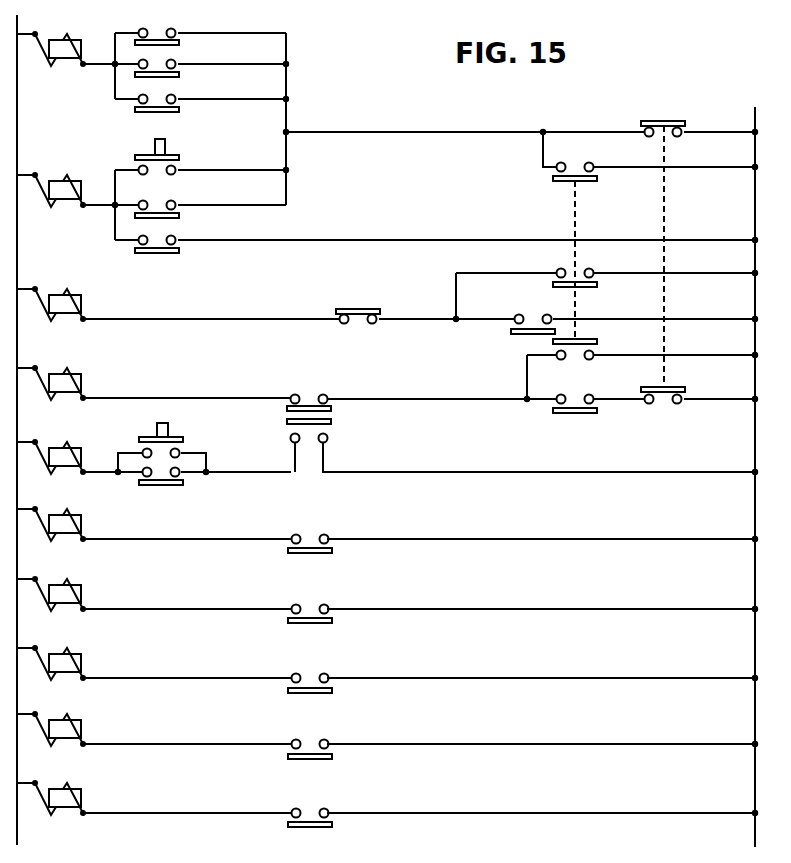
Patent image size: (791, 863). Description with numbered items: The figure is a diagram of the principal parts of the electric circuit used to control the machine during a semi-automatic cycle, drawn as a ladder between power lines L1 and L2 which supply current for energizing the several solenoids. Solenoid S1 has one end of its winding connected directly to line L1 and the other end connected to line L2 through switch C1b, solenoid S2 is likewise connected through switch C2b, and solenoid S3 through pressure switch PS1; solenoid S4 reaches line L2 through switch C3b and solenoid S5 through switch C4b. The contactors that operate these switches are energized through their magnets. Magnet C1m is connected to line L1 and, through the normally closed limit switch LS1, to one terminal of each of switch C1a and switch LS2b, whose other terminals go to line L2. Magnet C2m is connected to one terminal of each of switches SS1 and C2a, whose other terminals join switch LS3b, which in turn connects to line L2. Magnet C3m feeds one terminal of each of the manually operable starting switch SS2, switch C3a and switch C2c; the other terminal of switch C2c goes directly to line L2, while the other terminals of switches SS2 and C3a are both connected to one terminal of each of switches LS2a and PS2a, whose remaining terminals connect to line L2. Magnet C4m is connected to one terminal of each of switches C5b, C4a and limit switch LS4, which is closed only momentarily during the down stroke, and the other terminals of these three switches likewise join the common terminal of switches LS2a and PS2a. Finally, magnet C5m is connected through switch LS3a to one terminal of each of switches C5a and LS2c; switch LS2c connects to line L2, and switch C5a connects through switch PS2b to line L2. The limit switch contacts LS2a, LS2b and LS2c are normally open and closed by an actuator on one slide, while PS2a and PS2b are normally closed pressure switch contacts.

The magnet of contactor C4 C4m is at (44, 34).
The magnet of contactor C3 C3m is at (44, 176).
The magnet of contactor C1 C1m is at (44, 290).
The magnet of contactor C5 C5m is at (46, 366).
The magnet of contactor C2 C2m is at (44, 445).
The solenoid S1 is at (44, 505).
The solenoid S2 is at (58, 578).
The solenoid S3 is at (53, 648).
The solenoid S4 is at (55, 711).
The solenoid S5 is at (55, 781).
The switch b of contactor C5 C5b is at (181, 42).
The switch a of contactor C4 C4a is at (181, 75).
The limit switch LS4 is at (136, 109).
The manually operable starting switch SS2 is at (166, 143).
The switch a of contactor C3 C3a is at (181, 216).
The switch c of contactor C2 C2c is at (181, 251).
The individual switch a of pressure switch PS2 PS2a is at (662, 121).
The individual switch a of limit switch LS2 LS2a is at (553, 178).
The individual switch b of limit switch LS2 LS2b is at (597, 285).
The individual switch c of limit switch LS2 LS2c is at (597, 340).
The switch a of contactor C1 C1a is at (514, 332).
The switch a of contactor C5 C5a is at (565, 413).
The individual switch b of pressure switch PS2 PS2b is at (663, 400).
The limit switch LS1 is at (357, 308).
The individual switch a of limit switch LS3 LS3a is at (330, 409).
The individual switch b of limit switch LS3 LS3b is at (330, 422).
The starting switch SS1 is at (168, 432).
The switch a of contactor C2 C2a is at (163, 486).
The switch b of contactor C1 C1b is at (329, 551).
The switch b of contactor C2 C2b is at (329, 622).
The pressure switch PS1 is at (329, 692).
The switch b of contactor C3 C3b is at (329, 757).
The switch b of contactor C4 C4b is at (329, 826).
The power line L1 is at (24, 834).
The power line L2 is at (746, 831).